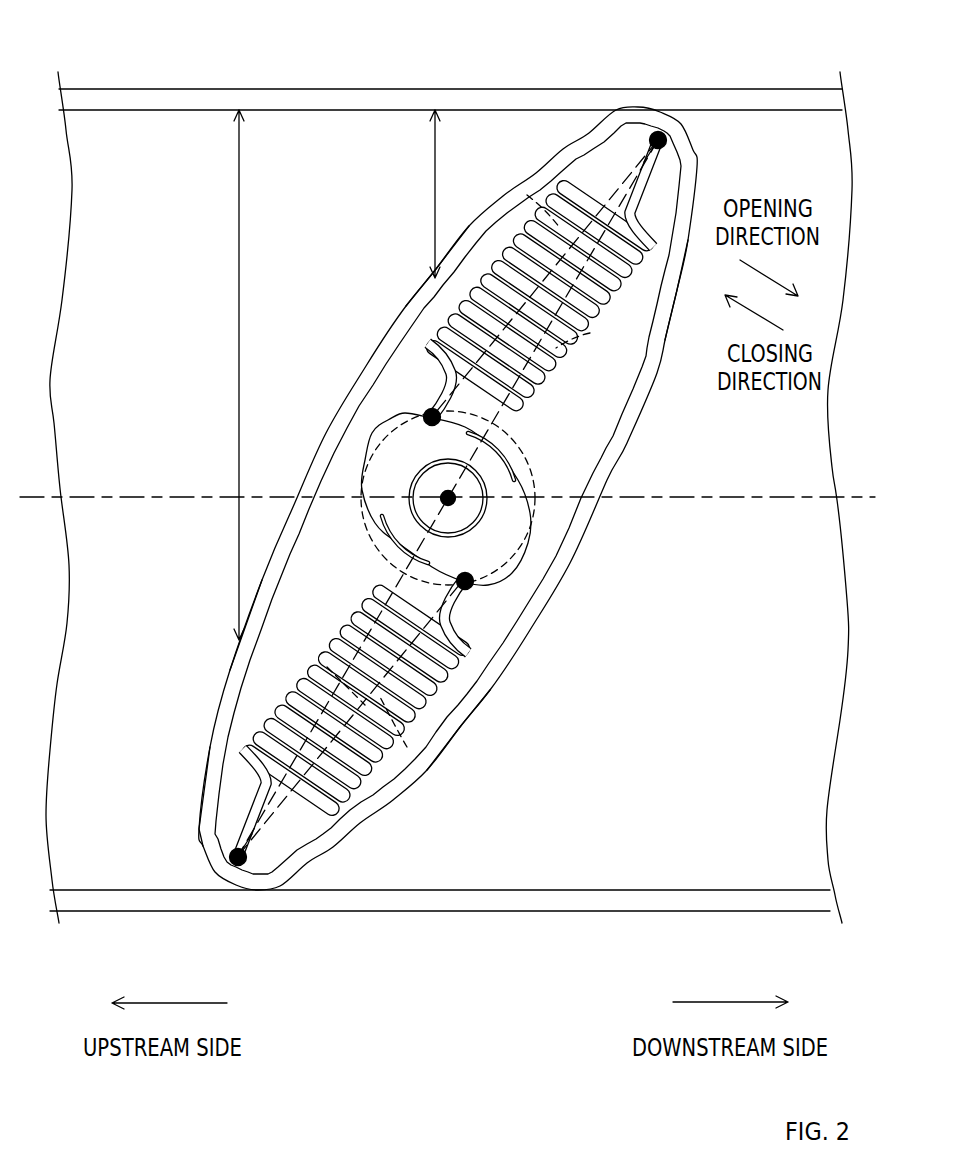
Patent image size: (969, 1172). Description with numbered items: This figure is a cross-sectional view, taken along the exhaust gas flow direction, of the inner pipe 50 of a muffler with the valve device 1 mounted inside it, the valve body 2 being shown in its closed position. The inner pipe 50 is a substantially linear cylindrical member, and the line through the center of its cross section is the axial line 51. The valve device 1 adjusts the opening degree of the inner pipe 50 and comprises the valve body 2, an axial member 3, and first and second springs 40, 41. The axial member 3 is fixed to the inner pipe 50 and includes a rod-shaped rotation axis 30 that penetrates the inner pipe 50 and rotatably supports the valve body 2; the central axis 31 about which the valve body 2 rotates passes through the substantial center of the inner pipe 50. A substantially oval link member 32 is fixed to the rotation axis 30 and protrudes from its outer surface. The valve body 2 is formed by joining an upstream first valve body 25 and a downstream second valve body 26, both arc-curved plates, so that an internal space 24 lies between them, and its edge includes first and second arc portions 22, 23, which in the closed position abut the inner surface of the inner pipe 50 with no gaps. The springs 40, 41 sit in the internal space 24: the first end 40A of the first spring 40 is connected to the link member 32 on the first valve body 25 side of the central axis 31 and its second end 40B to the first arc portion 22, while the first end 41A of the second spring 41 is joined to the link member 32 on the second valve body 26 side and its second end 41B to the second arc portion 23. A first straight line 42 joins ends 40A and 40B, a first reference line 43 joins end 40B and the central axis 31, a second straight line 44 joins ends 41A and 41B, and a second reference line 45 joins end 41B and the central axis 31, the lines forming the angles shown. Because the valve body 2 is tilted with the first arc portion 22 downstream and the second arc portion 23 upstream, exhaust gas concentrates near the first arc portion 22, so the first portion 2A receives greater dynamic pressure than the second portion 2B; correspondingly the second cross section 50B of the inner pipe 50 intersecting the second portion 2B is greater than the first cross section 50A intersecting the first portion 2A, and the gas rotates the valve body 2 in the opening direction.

The valve device 1 is at (660, 742).
The valve body 2 is at (520, 685).
The first portion 2A is at (407, 303).
The second portion 2B is at (228, 668).
The axial member 3 is at (535, 453).
The first arc portion 22 is at (673, 140).
The second arc portion 23 is at (228, 862).
The internal space 24 is at (617, 368).
The first valve body 25 is at (211, 740).
The second valve body 26 is at (459, 728).
The rotation axis 30 is at (427, 517).
The central axis 31 is at (440, 497).
The link member 32 is at (382, 448).
The first spring 40 is at (485, 341).
The first end of the first spring 40A is at (428, 412).
The second end of the first spring 40B is at (677, 168).
The second spring 41 is at (297, 751).
The first end of the second spring 41A is at (470, 584).
The second end of the second spring 41B is at (262, 872).
The first straight line 42 is at (527, 195).
The first reference line 43 is at (590, 333).
The second straight line 44 is at (407, 747).
The second reference line 45 is at (327, 667).
The inner pipe 50 is at (517, 92).
The first cross section 50A is at (433, 152).
The second cross section 50B is at (239, 247).
The axial line 51 is at (745, 500).